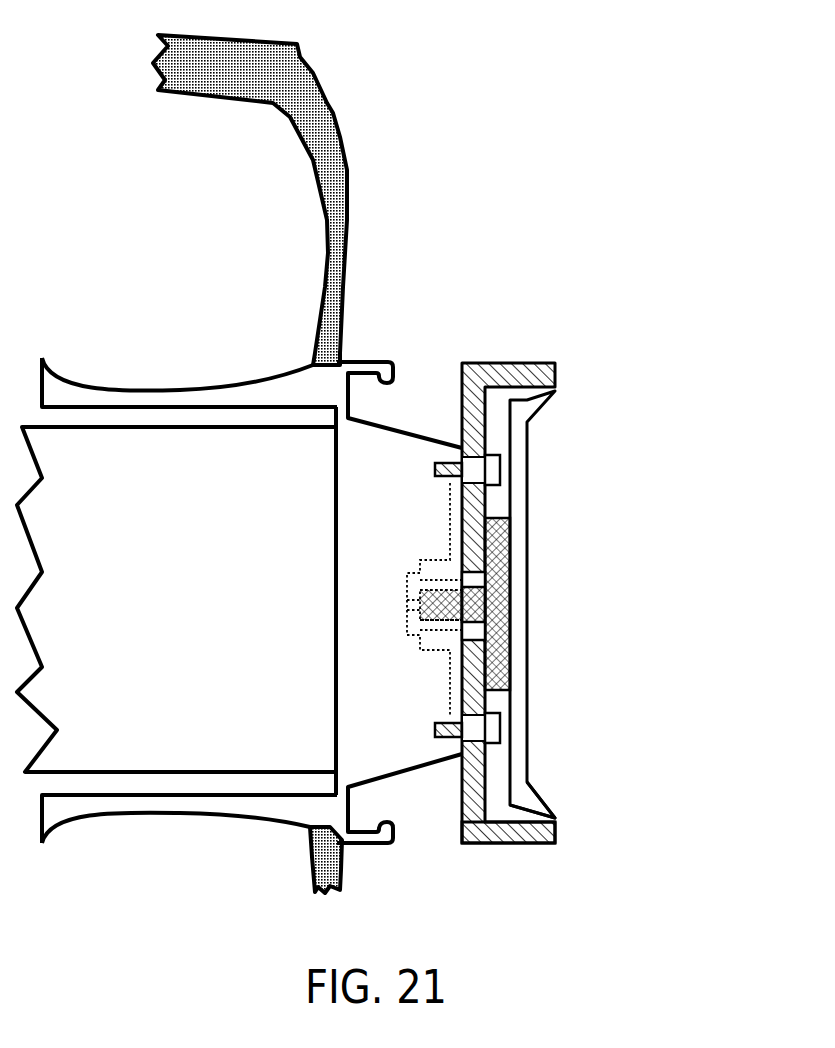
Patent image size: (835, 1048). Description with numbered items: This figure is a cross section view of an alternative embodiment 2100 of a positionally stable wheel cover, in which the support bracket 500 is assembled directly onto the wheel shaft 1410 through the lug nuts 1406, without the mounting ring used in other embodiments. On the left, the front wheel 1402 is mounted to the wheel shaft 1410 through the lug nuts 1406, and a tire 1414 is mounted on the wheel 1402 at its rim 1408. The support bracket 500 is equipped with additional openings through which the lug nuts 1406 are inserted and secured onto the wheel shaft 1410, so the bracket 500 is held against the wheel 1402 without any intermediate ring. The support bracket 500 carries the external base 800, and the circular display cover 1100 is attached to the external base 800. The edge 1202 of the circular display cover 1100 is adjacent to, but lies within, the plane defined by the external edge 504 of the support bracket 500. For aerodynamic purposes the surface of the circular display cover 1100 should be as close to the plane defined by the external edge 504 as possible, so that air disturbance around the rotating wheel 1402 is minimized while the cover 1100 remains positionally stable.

The alternative embodiment 2100 is at (682, 363).
The tire 1414 is at (327, 246).
The rim 1408 is at (368, 358).
The front wheel 1402 is at (283, 409).
The wheel shaft 1410 is at (215, 660).
The lug nuts 1406 is at (436, 472).
The support bracket 500 is at (476, 362).
The external edge 504 is at (557, 830).
The external base 800 is at (500, 517).
The circular display cover 1100 is at (530, 600).
The edge 1202 is at (530, 788).